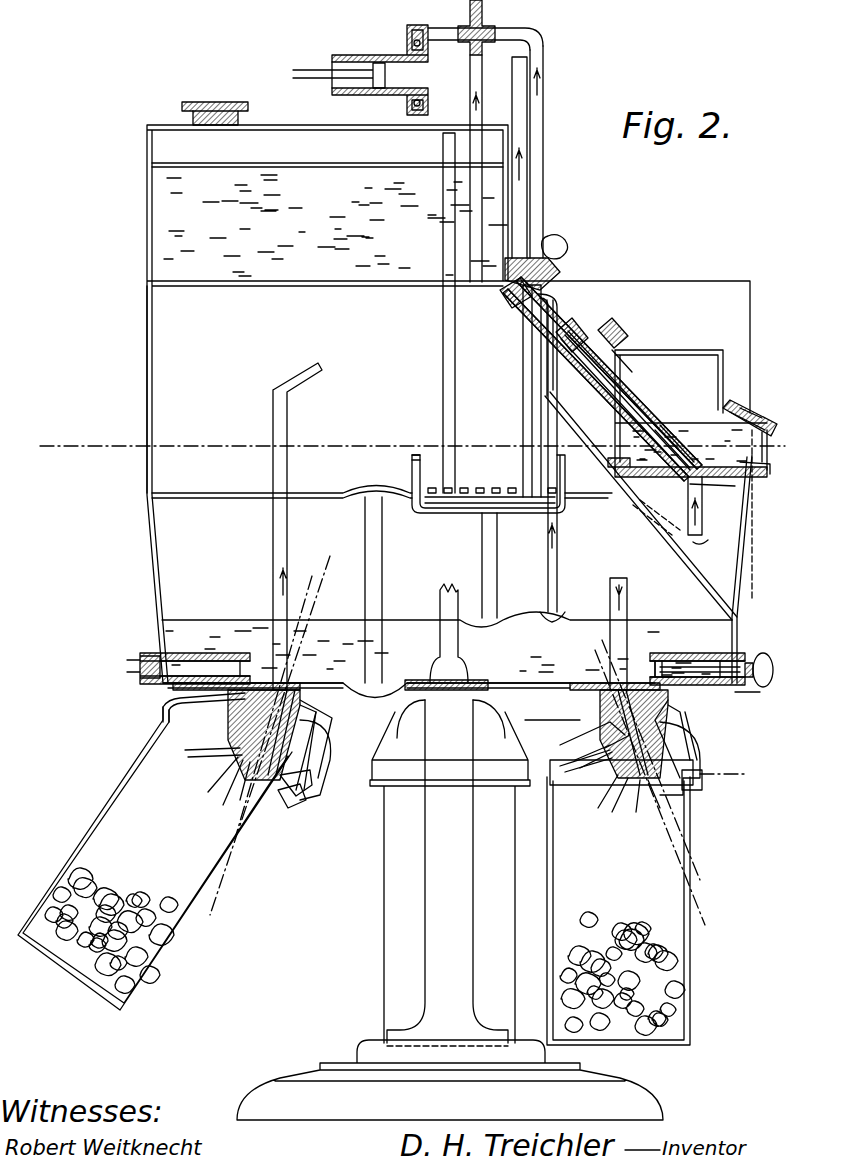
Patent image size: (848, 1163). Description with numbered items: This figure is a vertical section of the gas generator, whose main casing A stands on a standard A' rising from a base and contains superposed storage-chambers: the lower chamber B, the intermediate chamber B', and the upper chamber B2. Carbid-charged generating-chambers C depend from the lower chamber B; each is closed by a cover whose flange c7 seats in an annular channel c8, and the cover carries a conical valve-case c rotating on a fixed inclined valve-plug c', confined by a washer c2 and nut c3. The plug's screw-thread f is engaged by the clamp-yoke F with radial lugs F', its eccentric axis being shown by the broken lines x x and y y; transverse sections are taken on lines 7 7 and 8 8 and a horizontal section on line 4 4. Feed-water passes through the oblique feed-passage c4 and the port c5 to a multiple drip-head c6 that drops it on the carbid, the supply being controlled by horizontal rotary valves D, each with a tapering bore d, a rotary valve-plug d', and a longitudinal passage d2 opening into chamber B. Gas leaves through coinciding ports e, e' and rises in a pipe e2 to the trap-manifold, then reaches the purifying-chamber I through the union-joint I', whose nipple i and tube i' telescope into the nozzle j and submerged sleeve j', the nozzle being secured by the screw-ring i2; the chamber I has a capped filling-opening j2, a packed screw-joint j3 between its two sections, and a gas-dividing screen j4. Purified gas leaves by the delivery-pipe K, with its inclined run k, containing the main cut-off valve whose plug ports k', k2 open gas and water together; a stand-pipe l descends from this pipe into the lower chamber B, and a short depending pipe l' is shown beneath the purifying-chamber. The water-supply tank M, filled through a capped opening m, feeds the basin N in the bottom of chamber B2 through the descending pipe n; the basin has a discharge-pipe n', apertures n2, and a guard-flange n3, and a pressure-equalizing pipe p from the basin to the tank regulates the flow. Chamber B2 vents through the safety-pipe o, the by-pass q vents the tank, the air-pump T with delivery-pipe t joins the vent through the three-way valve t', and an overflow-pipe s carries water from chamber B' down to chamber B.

The tank A is at (436, 411).
The valve stem A' is at (447, 815).
The water reservoir M is at (300, 158).
The filler cap m is at (210, 118).
The pump T is at (353, 51).
The pump rod and pipe t is at (418, 58).
The tee fitting t' is at (487, 27).
The pipe o is at (470, 10).
The pipe q is at (543, 130).
The pipe K is at (527, 190).
The inclined pipe k is at (602, 379).
The pipe coupling k' is at (548, 262).
The pipe fitting k2 is at (505, 302).
The pipe p is at (443, 234).
The pipe n is at (520, 391).
The pipe n' is at (476, 565).
The perforations n2 is at (498, 488).
The box wall n3 is at (424, 455).
The box N is at (455, 506).
The pipe l is at (551, 458).
The pipe l' is at (698, 510).
The rod i is at (621, 396).
The rod i' is at (631, 398).
The rod collar i2 is at (614, 326).
The chamber I is at (687, 429).
The chamber inlet I' is at (622, 352).
The hopper j is at (641, 460).
The hopper passage j' is at (674, 432).
The nozzle j2 is at (755, 410).
The chamber bottom j3 is at (770, 472).
The outlet j4 is at (738, 488).
The tank bottom B is at (366, 672).
The partition B' is at (442, 582).
The tank wall B2 is at (330, 432).
The pipe s is at (382, 551).
The valve lever e is at (387, 730).
The valve pipe e' is at (450, 717).
The pipe e2 is at (273, 547).
The spout D is at (222, 653).
The spout rod d is at (700, 652).
The spout collar d' is at (717, 654).
The spout flange d2 is at (656, 661).
The valve body c is at (462, 735).
The valve casing c' is at (452, 743).
The casing wall c2 is at (697, 744).
The casing flange c3 is at (702, 770).
The valve passage c4 is at (292, 752).
The spring arm c5 is at (215, 748).
The prongs c6 is at (215, 770).
The cap c7 is at (298, 790).
The cap lug c8 is at (284, 808).
The valve seat f is at (312, 722).
The stand F is at (450, 900).
The bottle holder F' is at (517, 760).
The bottle C is at (355, 876).
The axis line x is at (453, 734).
The axis line y is at (218, 836).
The section line 4 is at (413, 446).
The section line 7 is at (636, 709).
The section line 8 is at (530, 795).